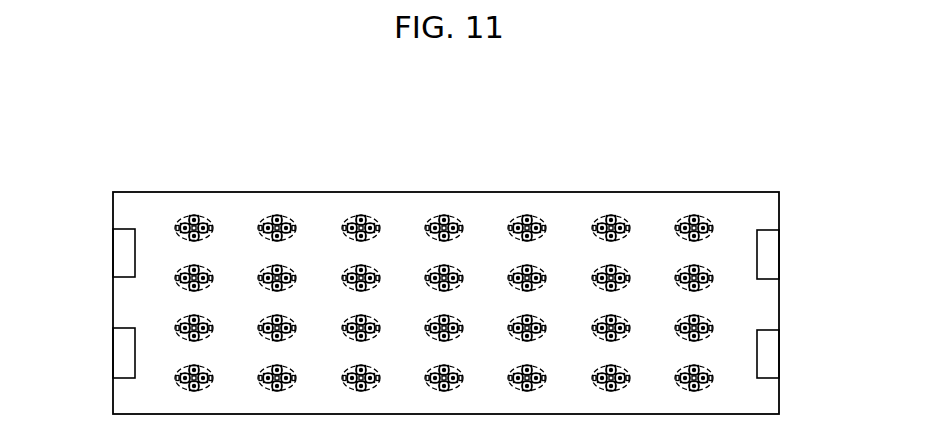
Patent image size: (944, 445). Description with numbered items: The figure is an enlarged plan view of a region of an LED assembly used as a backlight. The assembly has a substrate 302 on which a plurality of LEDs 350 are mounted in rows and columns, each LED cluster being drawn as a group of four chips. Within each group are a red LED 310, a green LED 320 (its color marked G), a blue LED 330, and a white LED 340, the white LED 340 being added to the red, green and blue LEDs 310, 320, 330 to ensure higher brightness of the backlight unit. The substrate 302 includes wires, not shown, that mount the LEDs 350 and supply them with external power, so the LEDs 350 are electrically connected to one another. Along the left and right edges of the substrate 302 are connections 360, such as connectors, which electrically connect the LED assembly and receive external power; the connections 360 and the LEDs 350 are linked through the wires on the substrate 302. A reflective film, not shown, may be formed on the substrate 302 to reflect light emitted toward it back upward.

The substrate 302 is at (762, 210).
The connections 360 is at (772, 250).
The LEDs 350 is at (209, 158).
The red LED 310 is at (193, 221).
The green LED 320 is at (183, 225).
The blue LED 330 is at (200, 225).
The white LED 340 is at (245, 180).
The green G is at (175, 228).